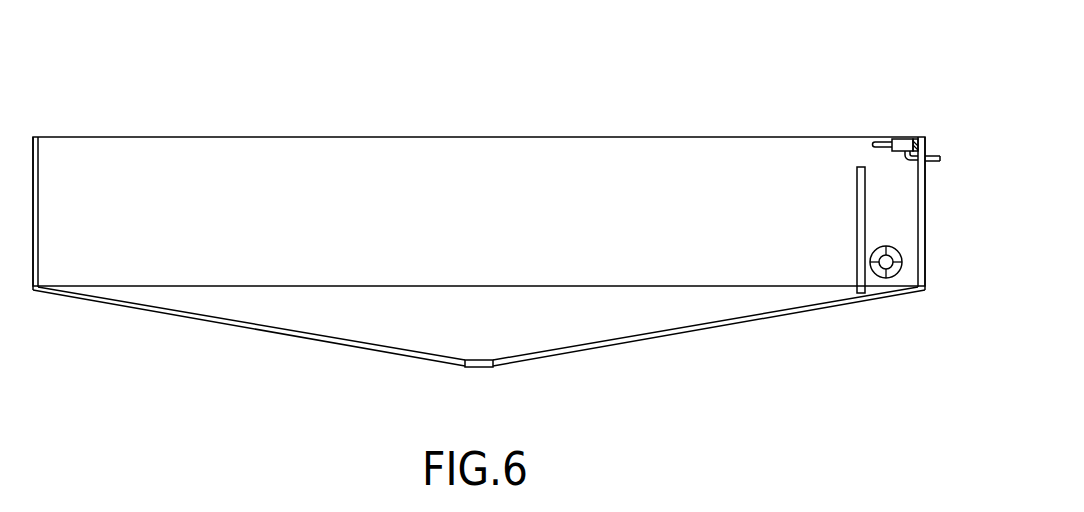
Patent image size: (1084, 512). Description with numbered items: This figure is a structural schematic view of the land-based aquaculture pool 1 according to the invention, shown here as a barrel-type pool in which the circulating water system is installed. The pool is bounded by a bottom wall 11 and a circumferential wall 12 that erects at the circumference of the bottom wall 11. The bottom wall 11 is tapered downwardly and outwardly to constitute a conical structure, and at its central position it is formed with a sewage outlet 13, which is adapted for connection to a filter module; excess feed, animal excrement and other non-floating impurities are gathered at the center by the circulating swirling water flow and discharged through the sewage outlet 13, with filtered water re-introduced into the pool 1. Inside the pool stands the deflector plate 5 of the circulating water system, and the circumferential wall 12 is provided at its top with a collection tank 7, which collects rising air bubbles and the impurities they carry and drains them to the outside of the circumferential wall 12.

The land-based aquaculture pool 1 is at (152, 116).
The circumferential wall 12 is at (37, 198).
The bottom wall 11 is at (243, 323).
The sewage outlet 13 is at (483, 365).
The deflector plate 5 is at (862, 208).
The collection tank 7 is at (900, 143).